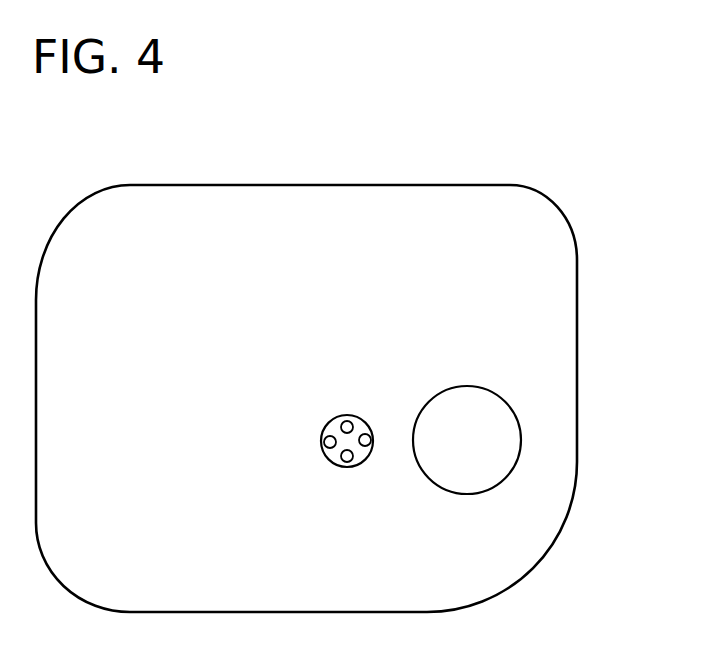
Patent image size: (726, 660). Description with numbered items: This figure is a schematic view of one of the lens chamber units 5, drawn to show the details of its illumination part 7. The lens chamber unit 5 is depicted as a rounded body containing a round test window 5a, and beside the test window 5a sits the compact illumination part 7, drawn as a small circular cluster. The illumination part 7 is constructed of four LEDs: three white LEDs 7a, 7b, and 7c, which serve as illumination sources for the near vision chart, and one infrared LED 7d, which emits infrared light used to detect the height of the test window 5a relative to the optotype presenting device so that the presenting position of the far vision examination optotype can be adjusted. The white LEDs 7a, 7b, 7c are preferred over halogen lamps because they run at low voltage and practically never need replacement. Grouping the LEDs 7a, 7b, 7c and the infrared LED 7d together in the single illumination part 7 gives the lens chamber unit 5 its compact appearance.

The lens chamber unit 5 is at (423, 233).
The test window 5a is at (480, 440).
The illumination part 7 is at (271, 437).
The white LED 7a is at (347, 412).
The white LED 7b is at (373, 438).
The white LED 7c is at (348, 462).
The infrared LED 7d is at (323, 443).